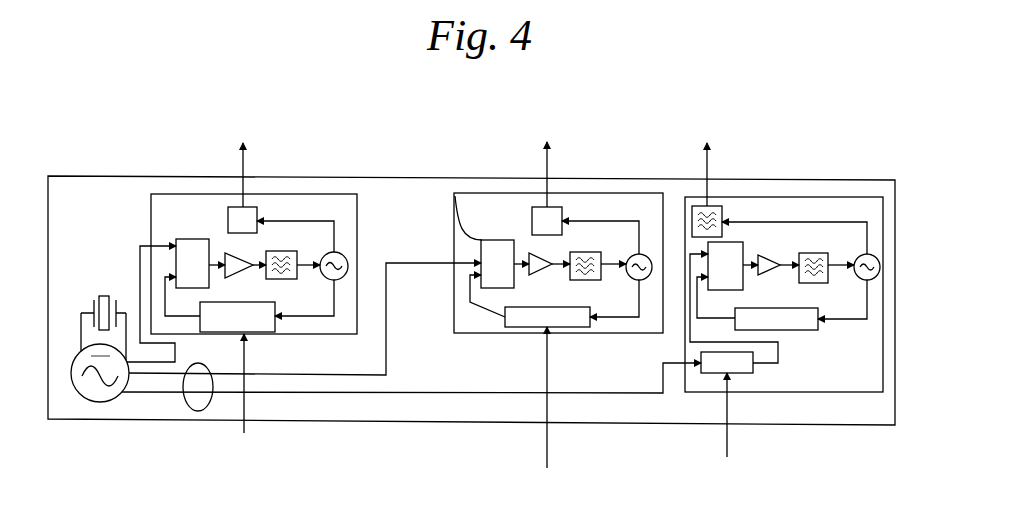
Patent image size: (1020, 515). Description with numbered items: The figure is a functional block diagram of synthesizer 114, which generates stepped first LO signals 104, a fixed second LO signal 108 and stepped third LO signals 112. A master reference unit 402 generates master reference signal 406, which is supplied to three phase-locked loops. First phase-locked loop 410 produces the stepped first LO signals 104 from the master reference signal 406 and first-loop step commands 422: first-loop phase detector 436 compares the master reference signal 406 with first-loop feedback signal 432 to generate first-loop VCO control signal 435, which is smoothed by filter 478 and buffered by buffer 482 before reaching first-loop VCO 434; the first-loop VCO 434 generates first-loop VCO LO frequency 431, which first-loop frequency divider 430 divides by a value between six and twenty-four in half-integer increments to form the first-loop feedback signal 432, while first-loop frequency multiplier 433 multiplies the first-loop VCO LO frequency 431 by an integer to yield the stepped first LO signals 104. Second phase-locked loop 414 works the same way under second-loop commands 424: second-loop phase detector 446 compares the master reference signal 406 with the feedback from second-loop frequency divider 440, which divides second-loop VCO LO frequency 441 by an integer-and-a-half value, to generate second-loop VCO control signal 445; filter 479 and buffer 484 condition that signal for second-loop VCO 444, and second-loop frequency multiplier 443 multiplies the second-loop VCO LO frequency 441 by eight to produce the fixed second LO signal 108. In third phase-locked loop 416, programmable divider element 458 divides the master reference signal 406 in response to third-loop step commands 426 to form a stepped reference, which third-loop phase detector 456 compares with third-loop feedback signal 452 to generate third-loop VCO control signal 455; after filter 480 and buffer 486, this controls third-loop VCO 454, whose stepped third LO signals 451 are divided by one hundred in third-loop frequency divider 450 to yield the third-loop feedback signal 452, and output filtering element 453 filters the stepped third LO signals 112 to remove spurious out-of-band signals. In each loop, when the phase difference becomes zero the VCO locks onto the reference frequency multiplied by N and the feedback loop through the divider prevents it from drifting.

The stepped first LO signals 104 is at (243, 158).
The fixed second LO signal 108 is at (547, 172).
The stepped third LO signals 112 is at (705, 175).
The synthesizer 114 is at (115, 240).
The master reference unit 402 is at (100, 397).
The master reference signal 406 is at (187, 412).
The first phase-locked loop 410 is at (348, 213).
The second phase-locked loop 414 is at (485, 208).
The third phase-locked loop 416 is at (788, 202).
The first-loop step commands 422 is at (245, 352).
The second-loop commands 424 is at (547, 412).
The third-loop step commands 426 is at (728, 420).
The first-loop frequency divider 430 is at (248, 301).
The first-loop VCO LO frequency 431 is at (335, 305).
The first-loop feedback signal 432 is at (166, 295).
The first-loop frequency multiplier 433 is at (228, 216).
The first-loop VCO 434 is at (322, 254).
The first-loop VCO control signal 435 is at (305, 268).
The first-loop phase detector 436 is at (192, 238).
The second-loop frequency divider 440 is at (578, 327).
The second-loop VCO LO frequency 441 is at (613, 318).
The second-loop frequency multiplier 443 is at (530, 220).
The second-loop VCO 444 is at (648, 254).
The second-loop VCO control signal 445 is at (617, 257).
The second-loop phase detector 446 is at (457, 197).
The third-loop frequency divider 450 is at (787, 328).
The stepped third LO signals 451 is at (837, 327).
The third-loop feedback signal 452 is at (700, 312).
The output filtering element 453 is at (718, 208).
The third-loop VCO 454 is at (862, 240).
The third-loop VCO control signal 455 is at (843, 262).
The third-loop phase detector 456 is at (743, 253).
The programmable divider element 458 is at (753, 370).
The filter 478 is at (260, 253).
The filter 479 is at (583, 270).
The filter 480 is at (813, 278).
The buffer 482 is at (242, 277).
The buffer 484 is at (537, 270).
The buffer 486 is at (762, 275).